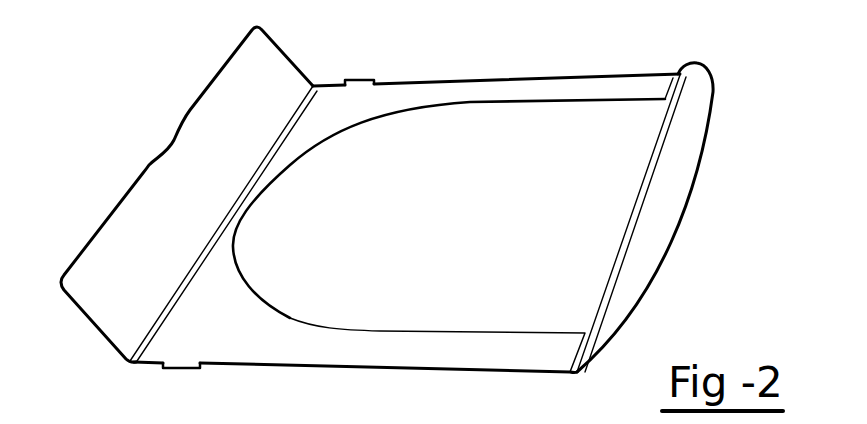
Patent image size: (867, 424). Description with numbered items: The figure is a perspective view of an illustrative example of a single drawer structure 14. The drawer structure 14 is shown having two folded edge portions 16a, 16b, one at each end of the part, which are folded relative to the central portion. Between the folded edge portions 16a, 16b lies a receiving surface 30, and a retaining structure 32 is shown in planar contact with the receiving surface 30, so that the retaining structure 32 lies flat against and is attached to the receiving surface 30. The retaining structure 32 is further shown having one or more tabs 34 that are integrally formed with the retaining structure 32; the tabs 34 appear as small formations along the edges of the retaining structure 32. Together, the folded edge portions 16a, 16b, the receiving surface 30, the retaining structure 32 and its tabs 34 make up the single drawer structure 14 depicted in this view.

The drawer structure 14 is at (566, 55).
The folded edge portion 16a is at (683, 192).
The folded edge portion 16b is at (123, 197).
The receiving surface 30 is at (472, 223).
The retaining structure 32 is at (460, 83).
The tab 34 is at (362, 80).